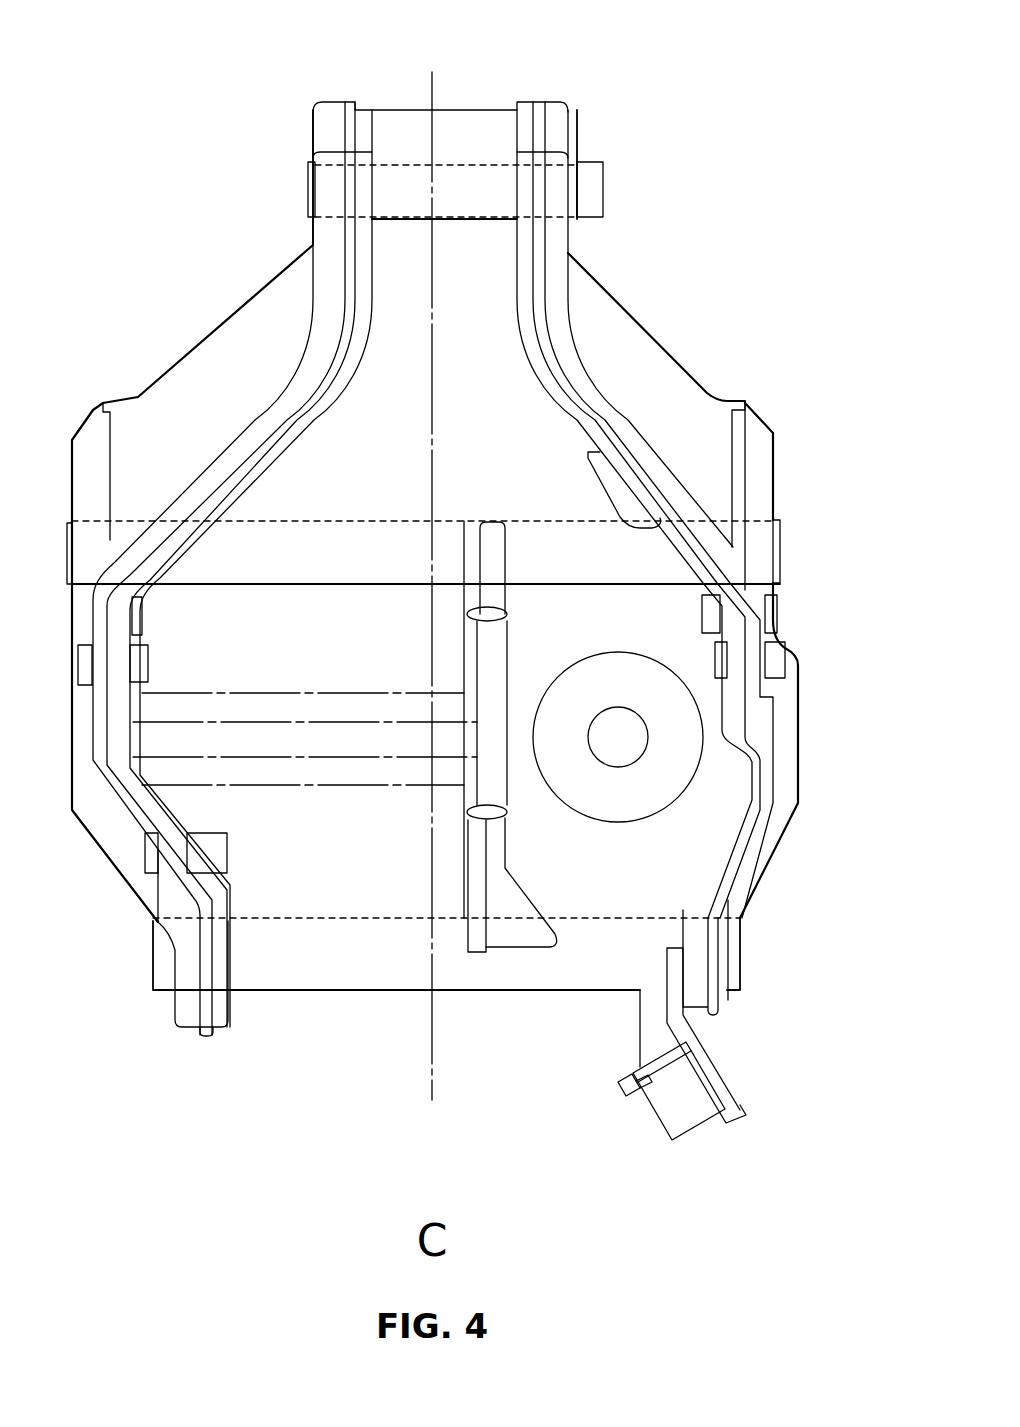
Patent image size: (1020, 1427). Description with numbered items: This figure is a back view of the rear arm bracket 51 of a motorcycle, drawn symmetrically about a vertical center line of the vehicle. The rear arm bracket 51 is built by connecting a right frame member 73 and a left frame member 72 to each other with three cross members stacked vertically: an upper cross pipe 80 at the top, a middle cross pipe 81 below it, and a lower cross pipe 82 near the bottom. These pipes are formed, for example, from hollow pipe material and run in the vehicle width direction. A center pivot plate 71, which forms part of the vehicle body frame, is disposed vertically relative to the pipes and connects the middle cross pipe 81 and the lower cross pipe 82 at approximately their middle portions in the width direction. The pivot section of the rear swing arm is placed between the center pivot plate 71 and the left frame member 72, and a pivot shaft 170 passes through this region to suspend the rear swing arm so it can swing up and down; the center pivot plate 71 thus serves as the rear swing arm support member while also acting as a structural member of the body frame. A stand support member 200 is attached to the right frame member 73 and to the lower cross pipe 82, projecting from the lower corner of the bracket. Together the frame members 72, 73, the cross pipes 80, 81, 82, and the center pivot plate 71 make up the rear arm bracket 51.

The rear arm bracket 51 is at (668, 258).
The upper cross pipe 80 is at (496, 108).
The left frame member 72 is at (207, 345).
The right frame member 73 is at (686, 363).
The middle cross pipe 81 is at (497, 520).
The center pivot plate 71 is at (462, 857).
The pivot shaft 170 is at (263, 722).
The lower cross pipe 82 is at (253, 920).
The stand support member 200 is at (672, 1108).